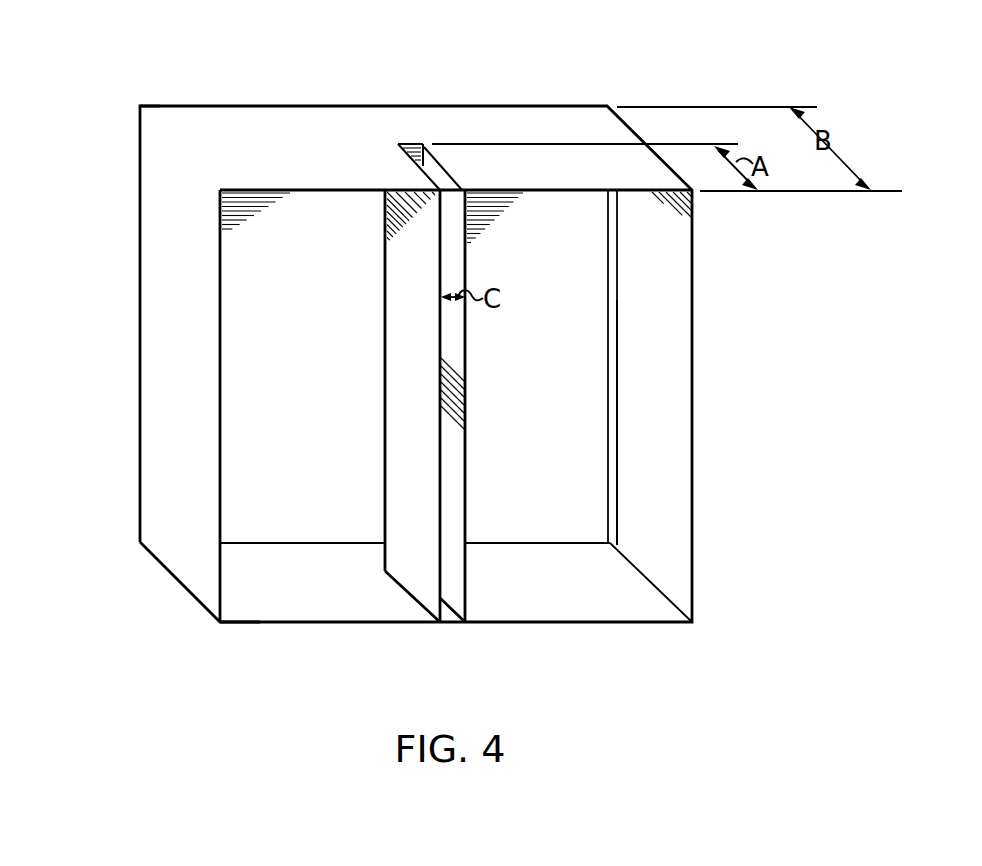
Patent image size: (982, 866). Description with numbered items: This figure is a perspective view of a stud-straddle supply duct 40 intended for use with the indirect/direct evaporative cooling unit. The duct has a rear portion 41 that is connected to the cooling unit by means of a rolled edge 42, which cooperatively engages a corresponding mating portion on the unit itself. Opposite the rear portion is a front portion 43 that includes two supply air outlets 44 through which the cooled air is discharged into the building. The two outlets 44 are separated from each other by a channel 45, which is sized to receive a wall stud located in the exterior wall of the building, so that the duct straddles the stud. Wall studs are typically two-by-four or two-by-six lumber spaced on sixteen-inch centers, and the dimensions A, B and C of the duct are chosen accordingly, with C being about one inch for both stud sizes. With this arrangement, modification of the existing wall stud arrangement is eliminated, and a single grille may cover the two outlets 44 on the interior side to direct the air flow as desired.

The stud-straddle supply duct 40 is at (138, 241).
The rear portion 41 is at (134, 102).
The rolled edge 42 is at (620, 432).
The front portion 43 is at (232, 637).
The supply air outlets 44 is at (353, 527).
The channel 45 is at (430, 166).